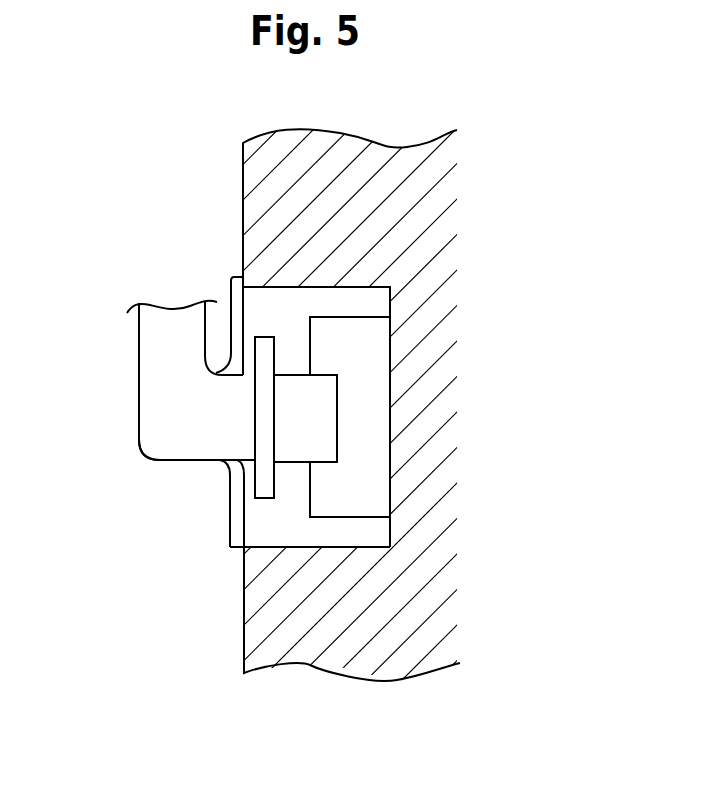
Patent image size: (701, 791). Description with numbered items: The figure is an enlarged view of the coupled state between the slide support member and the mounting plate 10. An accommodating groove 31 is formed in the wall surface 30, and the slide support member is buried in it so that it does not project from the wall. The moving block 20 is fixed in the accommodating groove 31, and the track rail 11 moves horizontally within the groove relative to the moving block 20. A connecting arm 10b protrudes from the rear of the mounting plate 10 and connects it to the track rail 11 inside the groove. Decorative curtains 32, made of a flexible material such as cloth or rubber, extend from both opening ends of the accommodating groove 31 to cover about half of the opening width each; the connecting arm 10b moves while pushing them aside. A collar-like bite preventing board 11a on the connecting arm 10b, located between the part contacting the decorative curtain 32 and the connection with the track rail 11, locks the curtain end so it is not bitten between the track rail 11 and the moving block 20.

The mounting plate 10 is at (140, 387).
The connecting arm 10b is at (233, 422).
The track rail 11 is at (320, 437).
The bite preventing board 11a is at (263, 495).
The moving block 20 is at (372, 385).
The wall surface 30 is at (238, 167).
The accommodating groove 31 is at (375, 533).
The decorative curtain 32 is at (229, 292).